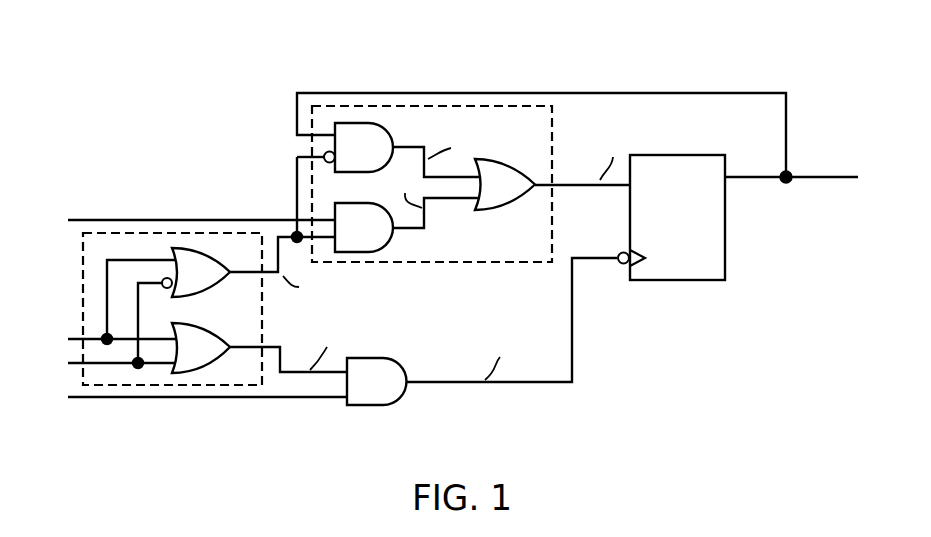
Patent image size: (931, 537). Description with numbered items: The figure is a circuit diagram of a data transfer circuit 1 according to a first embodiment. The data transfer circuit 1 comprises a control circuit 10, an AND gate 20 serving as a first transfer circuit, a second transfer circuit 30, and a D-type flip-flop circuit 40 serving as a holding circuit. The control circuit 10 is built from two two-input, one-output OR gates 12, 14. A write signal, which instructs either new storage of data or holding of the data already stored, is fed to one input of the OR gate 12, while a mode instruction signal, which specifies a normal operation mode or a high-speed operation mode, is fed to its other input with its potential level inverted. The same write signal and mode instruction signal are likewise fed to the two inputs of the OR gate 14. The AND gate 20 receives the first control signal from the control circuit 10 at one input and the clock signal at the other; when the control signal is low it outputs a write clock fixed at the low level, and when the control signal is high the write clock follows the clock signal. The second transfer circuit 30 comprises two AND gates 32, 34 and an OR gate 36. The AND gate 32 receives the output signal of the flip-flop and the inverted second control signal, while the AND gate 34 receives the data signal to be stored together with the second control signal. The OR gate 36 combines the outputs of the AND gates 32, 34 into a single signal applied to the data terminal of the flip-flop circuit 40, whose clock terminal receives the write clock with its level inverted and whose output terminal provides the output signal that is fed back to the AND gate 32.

The data transfer circuit 1 is at (787, 76).
The control circuit 10 is at (262, 312).
The OR gate 12 is at (193, 247).
The OR gate 14 is at (220, 328).
The AND gate 20 is at (375, 406).
The second transfer circuit 30 is at (552, 130).
The AND gate 32 is at (397, 141).
The AND gate 34 is at (366, 252).
The OR gate 36 is at (492, 212).
The D-type flip-flop circuit 40 is at (680, 281).